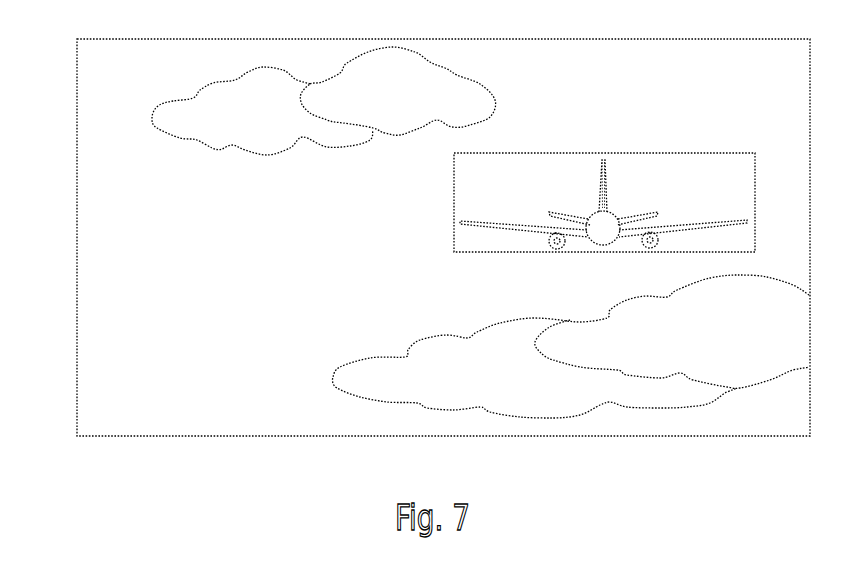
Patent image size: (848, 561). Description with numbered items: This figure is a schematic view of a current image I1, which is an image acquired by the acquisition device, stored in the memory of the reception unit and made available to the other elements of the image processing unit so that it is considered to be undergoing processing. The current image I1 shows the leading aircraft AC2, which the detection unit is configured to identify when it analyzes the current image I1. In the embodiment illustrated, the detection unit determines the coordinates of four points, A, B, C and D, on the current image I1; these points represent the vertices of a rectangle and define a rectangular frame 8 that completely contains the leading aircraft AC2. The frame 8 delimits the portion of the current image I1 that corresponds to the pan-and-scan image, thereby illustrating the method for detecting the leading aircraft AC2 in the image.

The current image I1 is at (77, 84).
The rectangular frame 8 is at (756, 193).
The leading aircraft AC2 is at (606, 180).